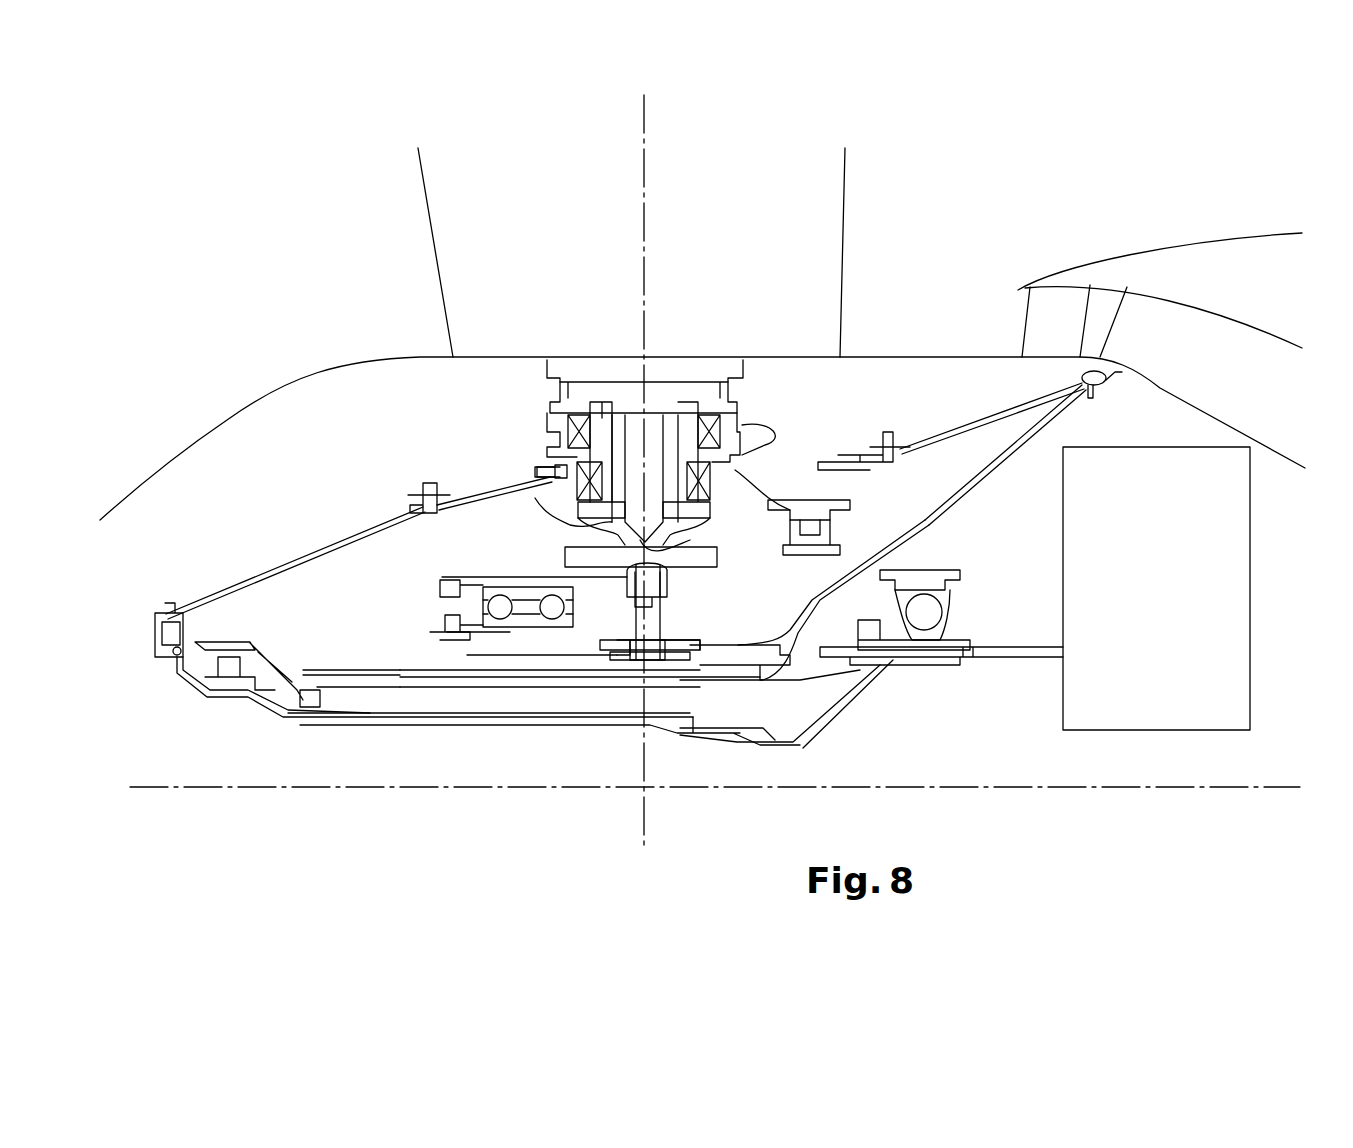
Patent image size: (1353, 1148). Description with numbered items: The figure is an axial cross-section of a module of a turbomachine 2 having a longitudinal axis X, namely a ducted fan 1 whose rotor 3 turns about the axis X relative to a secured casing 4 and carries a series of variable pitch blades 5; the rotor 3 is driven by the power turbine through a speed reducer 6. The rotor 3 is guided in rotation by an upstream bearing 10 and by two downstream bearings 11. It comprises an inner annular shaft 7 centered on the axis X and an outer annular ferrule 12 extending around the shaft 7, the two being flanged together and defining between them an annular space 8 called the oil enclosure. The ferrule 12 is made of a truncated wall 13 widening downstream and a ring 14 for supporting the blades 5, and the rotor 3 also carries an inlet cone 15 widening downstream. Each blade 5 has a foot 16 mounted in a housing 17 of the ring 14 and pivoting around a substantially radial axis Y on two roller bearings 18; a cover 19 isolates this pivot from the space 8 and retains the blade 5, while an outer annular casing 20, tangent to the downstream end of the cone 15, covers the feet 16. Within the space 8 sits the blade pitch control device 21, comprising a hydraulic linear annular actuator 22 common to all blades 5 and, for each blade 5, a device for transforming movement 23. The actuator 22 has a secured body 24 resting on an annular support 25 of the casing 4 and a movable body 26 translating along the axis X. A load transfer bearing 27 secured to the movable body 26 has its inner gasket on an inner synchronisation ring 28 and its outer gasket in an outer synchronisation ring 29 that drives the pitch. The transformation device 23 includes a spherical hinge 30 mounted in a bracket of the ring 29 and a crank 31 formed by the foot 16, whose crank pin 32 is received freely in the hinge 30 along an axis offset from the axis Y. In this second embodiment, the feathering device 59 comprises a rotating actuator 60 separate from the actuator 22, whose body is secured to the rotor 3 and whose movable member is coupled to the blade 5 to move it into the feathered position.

The ducted fan 1 is at (245, 343).
The turbomachine 2 is at (175, 337).
The rotor 3 is at (196, 586).
The secured casing 4 is at (1002, 465).
The variable pitch blade 5 is at (780, 228).
The speed reducer 6 is at (1165, 600).
The inner annular shaft 7 is at (398, 727).
The annular space 8 is at (336, 618).
The bearing 10 is at (180, 672).
The bearings 11 is at (830, 528).
The outer annular ferrule 12 is at (250, 568).
The truncated wall 13 is at (330, 556).
The ring 14 is at (567, 432).
The inlet cone 15 is at (162, 470).
The foot 16 is at (600, 418).
The housing 17 is at (668, 418).
The roller bearings 18 is at (772, 380).
The cover 19 is at (545, 500).
The outer annular casing 20 is at (500, 356).
The blade pitch control device 21 is at (466, 553).
The linear annular actuator 22 is at (402, 658).
The device for transforming movement 23 is at (682, 588).
The secured body 24 is at (472, 668).
The annular support 25 is at (500, 720).
The movable body 26 is at (538, 652).
The load transfer bearing 27 is at (614, 633).
The inner synchronisation ring 28 is at (508, 625).
The outer synchronisation ring 29 is at (520, 585).
The spherical hinge 30 is at (665, 600).
The crank 31 is at (660, 545).
The crank pin 32 is at (650, 605).
The feathering device 59 is at (710, 568).
The rotating actuator 60 is at (710, 550).
The longitudinal axis X is at (1160, 792).
The blade axis Y is at (646, 190).